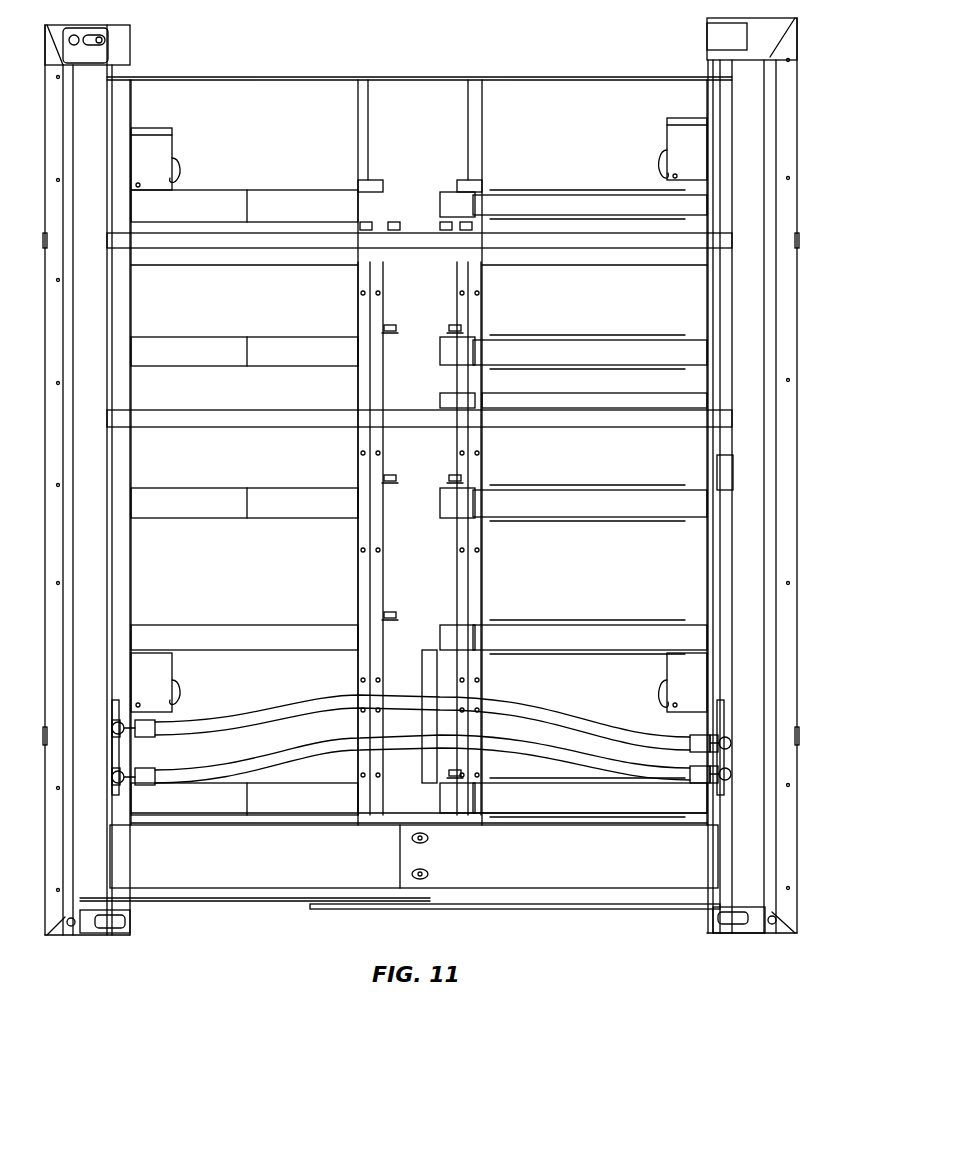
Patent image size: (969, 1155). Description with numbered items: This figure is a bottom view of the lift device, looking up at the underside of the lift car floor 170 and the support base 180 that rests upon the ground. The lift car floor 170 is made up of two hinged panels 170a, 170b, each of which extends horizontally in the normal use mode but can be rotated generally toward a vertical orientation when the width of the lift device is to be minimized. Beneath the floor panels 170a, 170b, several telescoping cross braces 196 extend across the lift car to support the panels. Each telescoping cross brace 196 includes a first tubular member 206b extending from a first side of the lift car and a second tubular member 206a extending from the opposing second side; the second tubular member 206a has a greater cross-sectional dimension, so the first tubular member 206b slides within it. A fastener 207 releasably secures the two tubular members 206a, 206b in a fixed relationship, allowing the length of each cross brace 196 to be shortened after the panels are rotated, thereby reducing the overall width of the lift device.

The support base 180 is at (790, 660).
The lift car floor 170 is at (430, 577).
The first hinged panel 170a is at (258, 580).
The second hinged panel 170b is at (563, 570).
The telescoping cross brace 196 is at (604, 193).
The second tubular member 206a is at (345, 497).
The first tubular member 206b is at (697, 493).
The fastener 207 is at (455, 482).